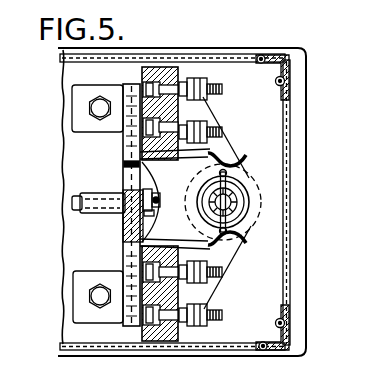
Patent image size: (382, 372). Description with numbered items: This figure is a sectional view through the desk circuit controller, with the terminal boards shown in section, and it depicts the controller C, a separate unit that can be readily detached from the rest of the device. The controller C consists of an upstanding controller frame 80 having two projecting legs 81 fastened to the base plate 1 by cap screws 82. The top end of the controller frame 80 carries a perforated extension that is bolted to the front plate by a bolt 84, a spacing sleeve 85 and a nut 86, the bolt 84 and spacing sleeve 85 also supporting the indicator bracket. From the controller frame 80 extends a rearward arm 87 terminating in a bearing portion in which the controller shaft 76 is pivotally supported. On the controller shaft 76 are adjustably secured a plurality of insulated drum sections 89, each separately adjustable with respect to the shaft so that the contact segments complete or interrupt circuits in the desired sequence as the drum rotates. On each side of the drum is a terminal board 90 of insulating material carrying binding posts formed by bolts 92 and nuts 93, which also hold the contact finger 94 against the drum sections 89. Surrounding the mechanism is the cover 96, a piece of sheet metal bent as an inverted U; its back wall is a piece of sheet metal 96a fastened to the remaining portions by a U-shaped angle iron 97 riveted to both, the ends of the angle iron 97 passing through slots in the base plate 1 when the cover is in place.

The base plate 1 is at (300, 172).
The controller shaft 76 is at (240, 196).
The controller frame 80 is at (132, 176).
The projecting legs 81 is at (115, 125).
The cap screws 82 is at (97, 101).
The bolt 84 is at (149, 214).
The spacing sleeve 85 is at (95, 201).
The nut 86 is at (149, 196).
The rearwardly extending arm 87 is at (131, 228).
The drum sections 89 is at (238, 224).
The terminal board 90 is at (162, 66).
The bolts 92 is at (224, 93).
The nuts 93 is at (204, 96).
The contact finger 94 is at (222, 153).
The cover 96 is at (224, 54).
The sheet metal back wall 96a is at (290, 266).
The U-shaped angle iron 97 is at (279, 66).
The controller C is at (246, 178).